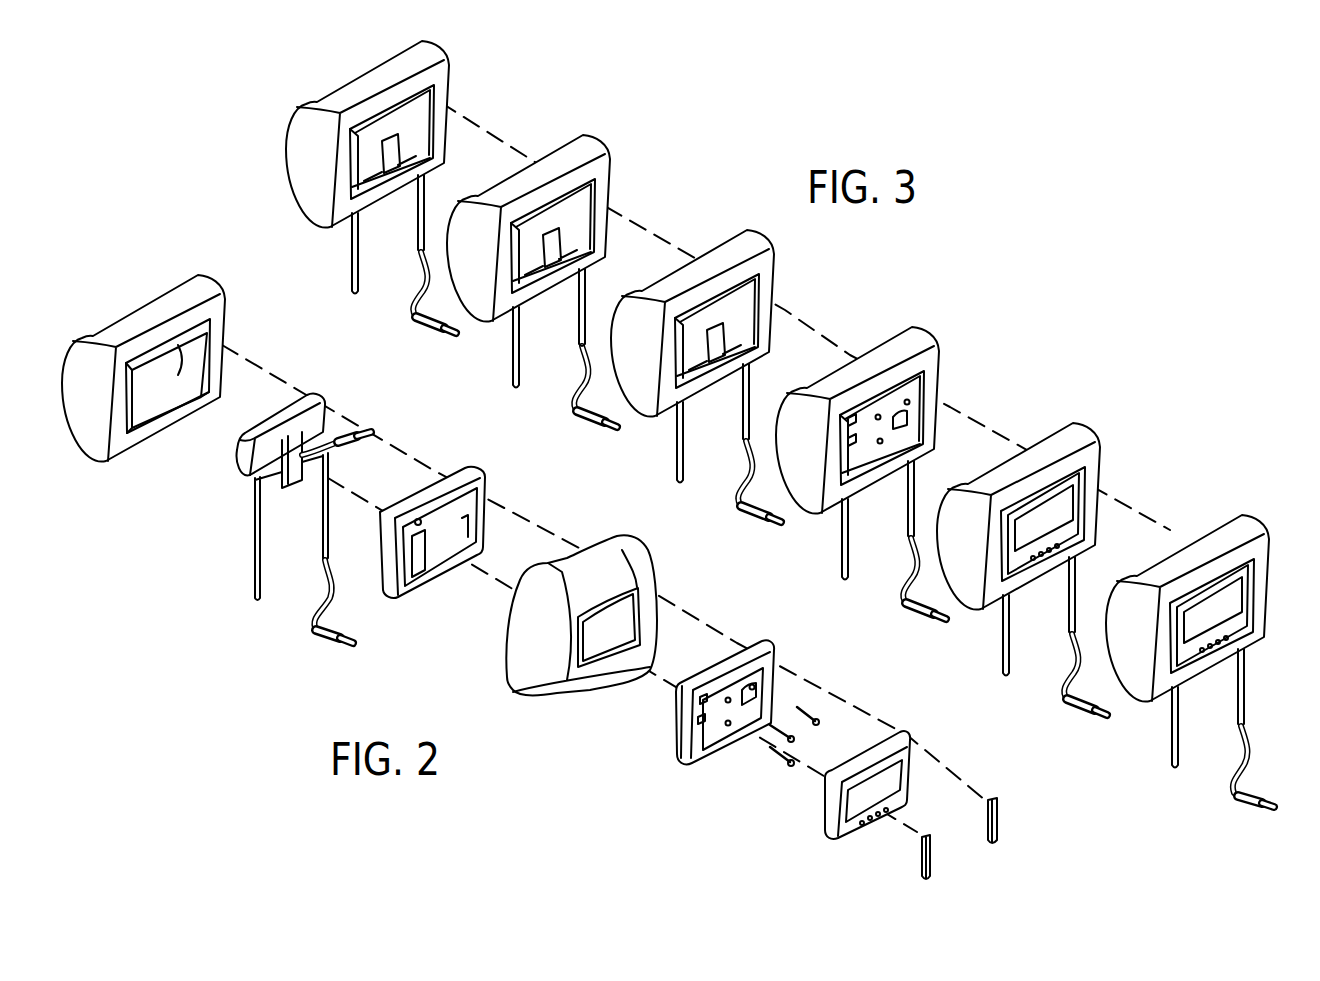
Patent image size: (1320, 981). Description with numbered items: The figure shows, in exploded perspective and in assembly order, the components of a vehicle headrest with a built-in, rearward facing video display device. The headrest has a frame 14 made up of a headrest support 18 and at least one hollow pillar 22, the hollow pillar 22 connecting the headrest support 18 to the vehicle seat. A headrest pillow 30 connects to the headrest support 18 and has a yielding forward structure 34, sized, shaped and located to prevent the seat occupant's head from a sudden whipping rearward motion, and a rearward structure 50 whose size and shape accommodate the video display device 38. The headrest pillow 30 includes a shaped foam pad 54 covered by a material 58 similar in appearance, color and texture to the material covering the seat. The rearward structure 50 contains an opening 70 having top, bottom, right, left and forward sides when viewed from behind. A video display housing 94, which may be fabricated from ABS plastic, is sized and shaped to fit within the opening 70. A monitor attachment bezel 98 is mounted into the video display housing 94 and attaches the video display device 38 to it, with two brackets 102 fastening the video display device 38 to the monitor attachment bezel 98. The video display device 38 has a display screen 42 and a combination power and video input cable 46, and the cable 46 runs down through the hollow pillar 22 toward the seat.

In FIG. 2, the frame 14 is at (253, 508).
In FIG. 2, the headrest support 18 is at (323, 417).
In FIG. 3, the hollow pillar 22 is at (607, 290).
In FIG. 2, the hollow pillar 22 is at (332, 508).
In FIG. 3, the headrest pillow 30 is at (1203, 581).
In FIG. 3, the yielding forward structure 34 is at (292, 124).
In FIG. 2, the video display device 38 is at (863, 764).
In FIG. 2, the display screen 42 is at (842, 793).
In FIG. 3, the power and video input cable 46 is at (1232, 795).
In FIG. 2, the power and video input cable 46 is at (327, 633).
In FIG. 3, the rearward structure 50 is at (1256, 547).
In FIG. 2, the shaped foam pad 54 is at (97, 460).
In FIG. 2, the material 58 is at (535, 697).
In FIG. 2, the opening 70 is at (210, 357).
In FIG. 2, the video display housing 94 is at (470, 473).
In FIG. 2, the monitor attachment bezel 98 is at (757, 645).
In FIG. 2, the brackets 102 is at (997, 822).